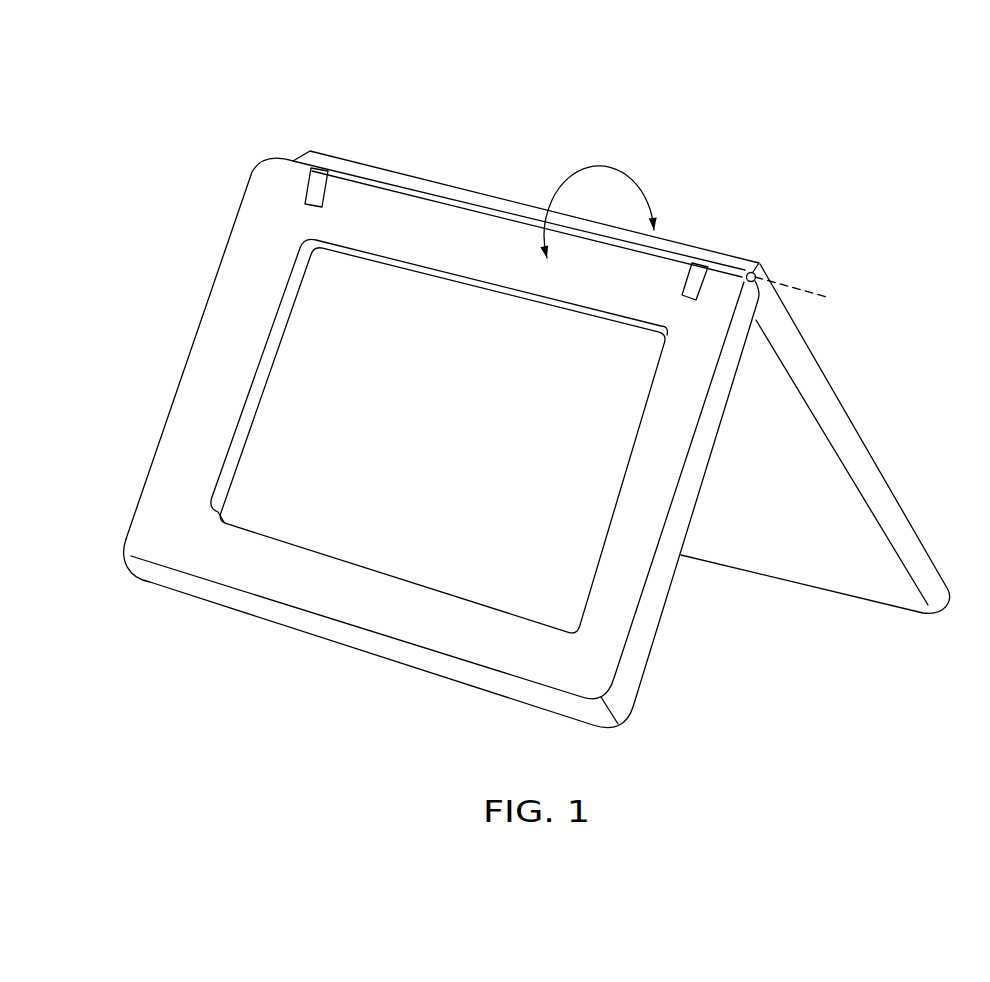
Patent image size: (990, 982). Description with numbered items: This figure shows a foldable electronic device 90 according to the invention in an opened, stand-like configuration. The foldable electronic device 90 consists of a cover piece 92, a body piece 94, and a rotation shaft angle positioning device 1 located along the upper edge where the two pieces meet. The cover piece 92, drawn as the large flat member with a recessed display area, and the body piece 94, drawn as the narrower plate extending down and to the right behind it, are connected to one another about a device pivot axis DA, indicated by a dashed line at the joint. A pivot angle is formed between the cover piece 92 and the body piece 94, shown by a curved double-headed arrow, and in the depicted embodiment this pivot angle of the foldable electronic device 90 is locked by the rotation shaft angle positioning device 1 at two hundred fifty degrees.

The foldable electronic device 90 is at (240, 125).
The rotation shaft angle positioning device 1 is at (412, 158).
The cover piece 92 is at (177, 393).
The body piece 94 is at (817, 353).
The device pivot axis DA is at (818, 272).